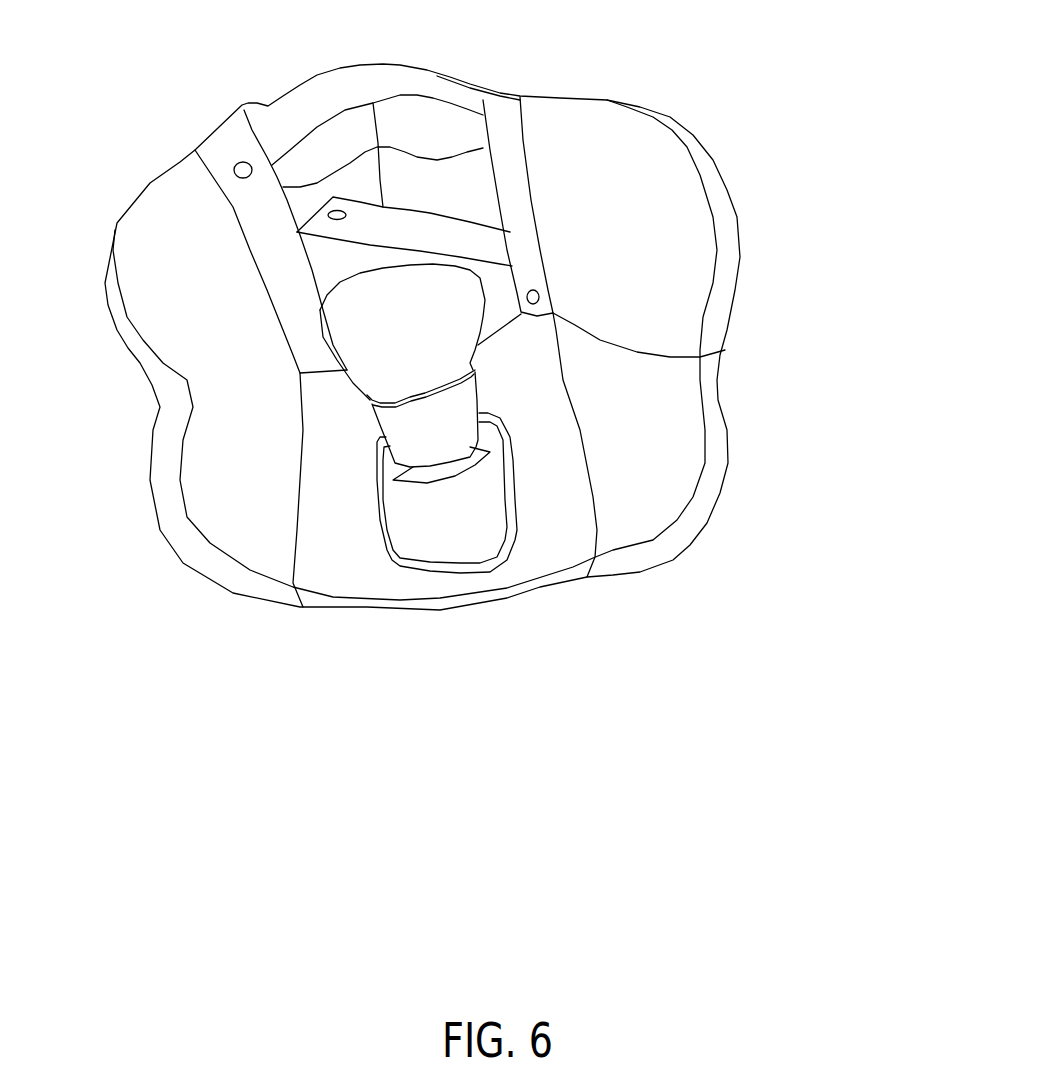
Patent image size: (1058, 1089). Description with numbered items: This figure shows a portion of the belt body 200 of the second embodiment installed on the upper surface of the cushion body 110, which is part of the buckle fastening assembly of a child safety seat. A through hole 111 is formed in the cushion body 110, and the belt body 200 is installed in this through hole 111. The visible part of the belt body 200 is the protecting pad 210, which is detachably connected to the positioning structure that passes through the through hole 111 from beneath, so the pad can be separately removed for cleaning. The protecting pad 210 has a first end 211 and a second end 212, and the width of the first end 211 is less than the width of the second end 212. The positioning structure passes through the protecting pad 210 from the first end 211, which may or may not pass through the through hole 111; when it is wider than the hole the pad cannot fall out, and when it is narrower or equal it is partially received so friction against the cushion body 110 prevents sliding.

The cushion body 110 is at (560, 508).
The through hole 111 is at (463, 470).
The belt body 200 is at (345, 399).
The protecting pad 210 is at (865, 208).
The first end 211 is at (440, 423).
The second end 212 is at (435, 322).